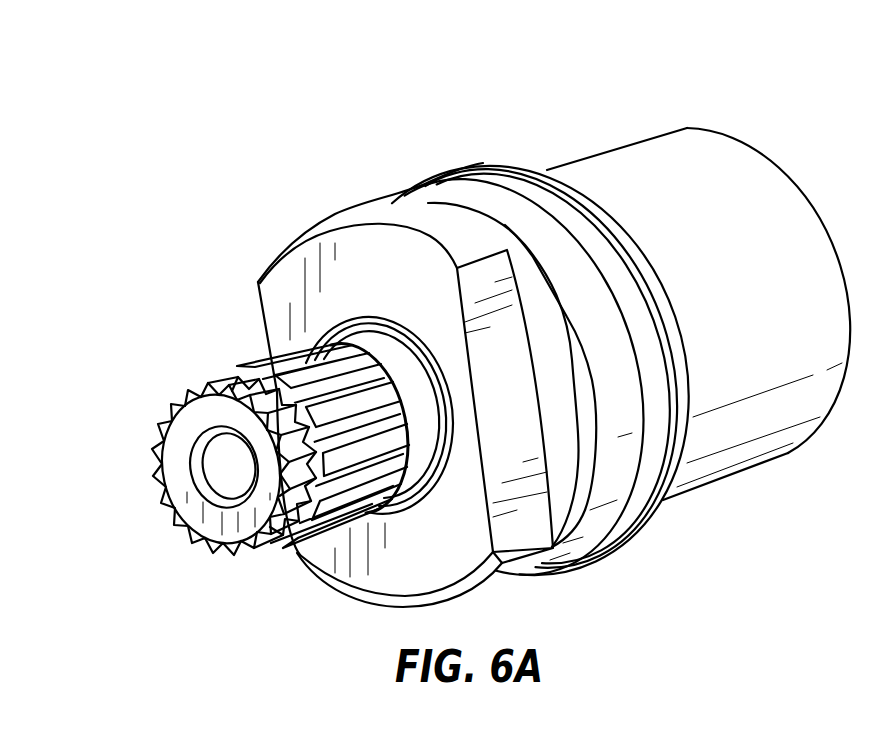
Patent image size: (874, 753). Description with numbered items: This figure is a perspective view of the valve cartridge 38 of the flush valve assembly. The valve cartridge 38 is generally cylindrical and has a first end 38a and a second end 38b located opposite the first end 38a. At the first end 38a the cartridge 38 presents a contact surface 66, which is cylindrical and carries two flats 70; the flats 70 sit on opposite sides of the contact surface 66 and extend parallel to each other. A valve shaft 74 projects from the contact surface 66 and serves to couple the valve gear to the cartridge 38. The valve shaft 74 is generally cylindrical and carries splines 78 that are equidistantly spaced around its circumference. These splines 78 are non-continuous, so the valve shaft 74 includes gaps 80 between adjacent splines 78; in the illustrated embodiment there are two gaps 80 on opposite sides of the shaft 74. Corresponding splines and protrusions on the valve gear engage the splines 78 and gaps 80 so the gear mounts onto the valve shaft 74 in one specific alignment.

The valve cartridge 38 is at (621, 328).
The first end 38a is at (413, 437).
The second end 38b is at (795, 180).
The contact surface 66 is at (373, 268).
The flats 70 is at (258, 300).
The valve shaft 74 is at (190, 428).
The splines 78 is at (258, 367).
The gaps 80 is at (387, 373).